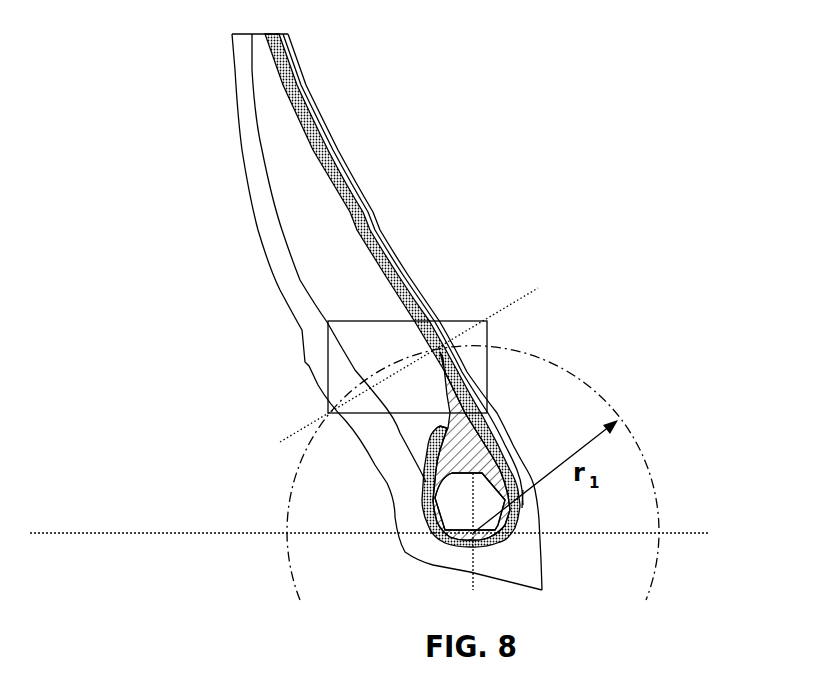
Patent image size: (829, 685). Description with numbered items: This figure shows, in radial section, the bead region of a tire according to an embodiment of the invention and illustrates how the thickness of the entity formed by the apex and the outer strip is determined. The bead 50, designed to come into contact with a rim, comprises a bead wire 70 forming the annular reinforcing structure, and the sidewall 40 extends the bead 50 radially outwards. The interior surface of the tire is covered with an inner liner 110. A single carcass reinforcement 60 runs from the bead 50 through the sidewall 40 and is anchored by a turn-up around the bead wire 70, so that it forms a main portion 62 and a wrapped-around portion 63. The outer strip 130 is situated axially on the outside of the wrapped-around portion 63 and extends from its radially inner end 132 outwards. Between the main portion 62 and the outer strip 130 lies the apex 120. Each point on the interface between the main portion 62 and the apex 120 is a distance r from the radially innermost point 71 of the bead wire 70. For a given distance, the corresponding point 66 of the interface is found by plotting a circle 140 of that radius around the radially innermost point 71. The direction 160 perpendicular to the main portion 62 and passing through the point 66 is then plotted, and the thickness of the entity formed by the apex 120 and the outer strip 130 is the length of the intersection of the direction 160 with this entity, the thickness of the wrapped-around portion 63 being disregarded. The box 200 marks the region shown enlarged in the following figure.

The sidewall 40 is at (253, 172).
The bead 50 is at (403, 515).
The carcass reinforcement 60 is at (297, 85).
The main portion 62 is at (467, 372).
The wrapped-around portion 63 is at (430, 447).
The point of the interface 66 is at (433, 340).
The bead wire 70 is at (437, 535).
The radially innermost point 71 is at (477, 546).
The inner liner 110 is at (362, 212).
The apex 120 is at (467, 441).
The outer strip 130 is at (312, 195).
The radially inner end 132 is at (412, 484).
The circle 140 is at (642, 455).
The direction 160 is at (507, 304).
The box 200 is at (487, 337).